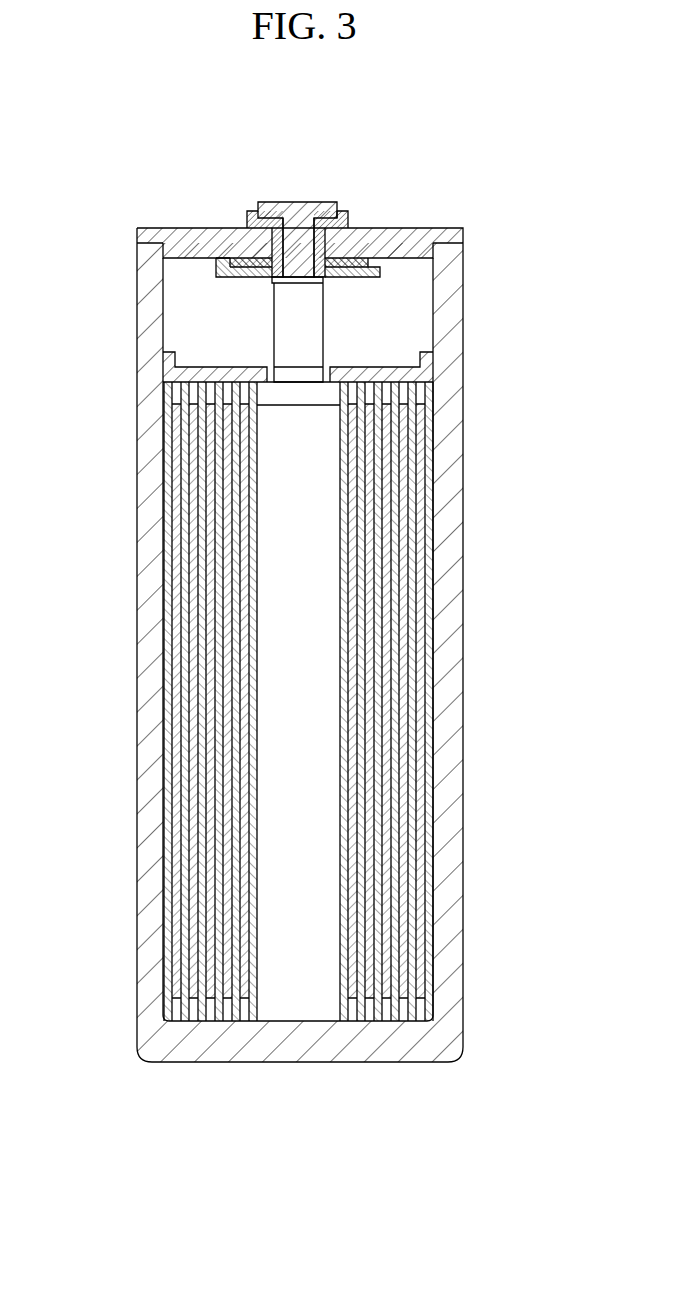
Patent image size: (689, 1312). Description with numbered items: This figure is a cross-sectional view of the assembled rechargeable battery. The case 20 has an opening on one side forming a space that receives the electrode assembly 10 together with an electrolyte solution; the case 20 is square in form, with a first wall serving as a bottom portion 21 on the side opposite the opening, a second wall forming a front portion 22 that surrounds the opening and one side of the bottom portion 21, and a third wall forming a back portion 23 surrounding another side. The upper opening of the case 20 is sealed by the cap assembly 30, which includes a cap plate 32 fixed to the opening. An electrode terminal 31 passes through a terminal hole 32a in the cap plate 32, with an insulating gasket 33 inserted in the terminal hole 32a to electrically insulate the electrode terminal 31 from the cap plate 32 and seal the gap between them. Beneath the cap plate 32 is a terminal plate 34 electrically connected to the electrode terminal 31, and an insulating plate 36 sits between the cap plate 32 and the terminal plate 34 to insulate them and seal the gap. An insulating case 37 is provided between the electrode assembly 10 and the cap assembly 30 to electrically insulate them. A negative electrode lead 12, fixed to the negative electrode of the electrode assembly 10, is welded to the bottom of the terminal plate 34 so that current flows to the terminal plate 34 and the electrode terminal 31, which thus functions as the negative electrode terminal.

The electrode assembly 10 is at (167, 648).
The negative electrode lead 12 is at (312, 328).
The case 20 is at (308, 683).
The first surface/wall (bottom portion) 21 is at (296, 1048).
The second surface/wall (front portion) 22 is at (448, 723).
The third surface/wall (back portion) 23 is at (150, 759).
The cap assembly 30 is at (327, 209).
The electrode terminal 31 is at (289, 210).
The cap plate 32 is at (185, 242).
The terminal hole 32a is at (323, 238).
The insulating gasket 33 is at (253, 212).
The terminal plate 34 is at (363, 273).
The insulating plate 36 is at (373, 263).
The insulating case 37 is at (420, 373).